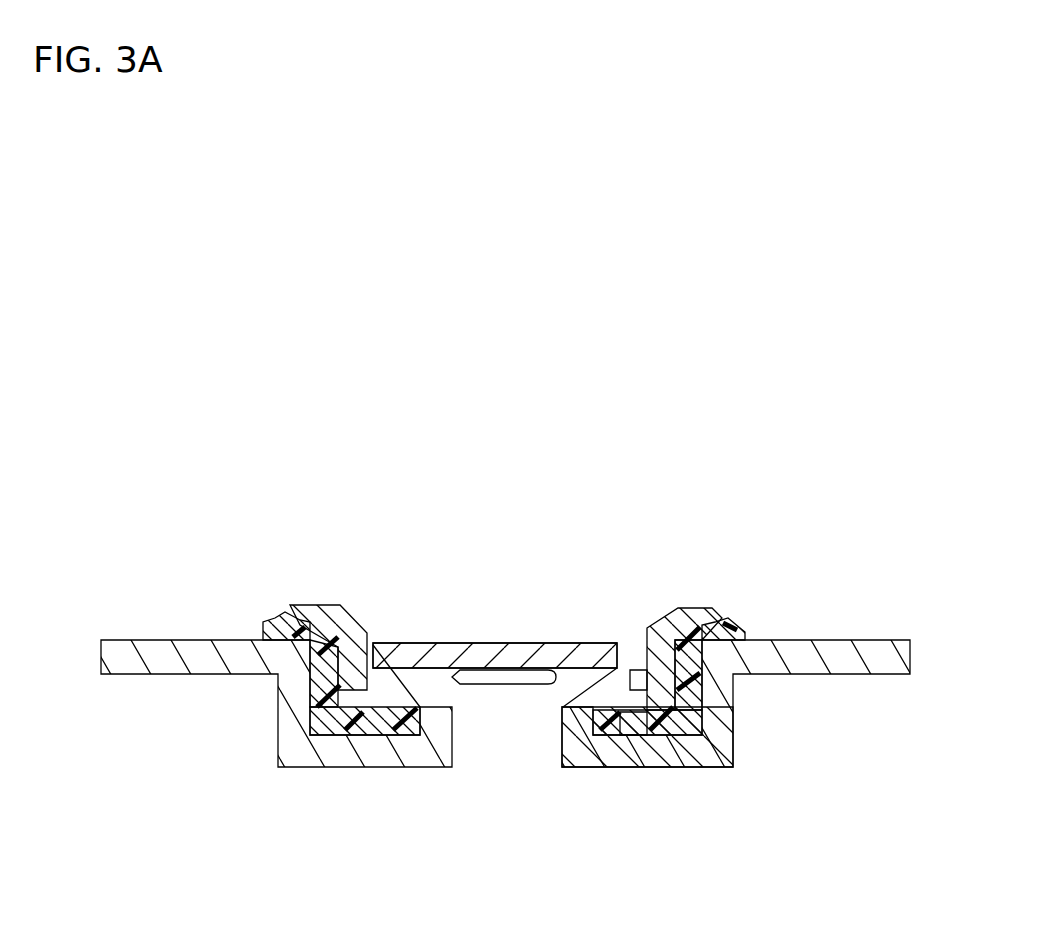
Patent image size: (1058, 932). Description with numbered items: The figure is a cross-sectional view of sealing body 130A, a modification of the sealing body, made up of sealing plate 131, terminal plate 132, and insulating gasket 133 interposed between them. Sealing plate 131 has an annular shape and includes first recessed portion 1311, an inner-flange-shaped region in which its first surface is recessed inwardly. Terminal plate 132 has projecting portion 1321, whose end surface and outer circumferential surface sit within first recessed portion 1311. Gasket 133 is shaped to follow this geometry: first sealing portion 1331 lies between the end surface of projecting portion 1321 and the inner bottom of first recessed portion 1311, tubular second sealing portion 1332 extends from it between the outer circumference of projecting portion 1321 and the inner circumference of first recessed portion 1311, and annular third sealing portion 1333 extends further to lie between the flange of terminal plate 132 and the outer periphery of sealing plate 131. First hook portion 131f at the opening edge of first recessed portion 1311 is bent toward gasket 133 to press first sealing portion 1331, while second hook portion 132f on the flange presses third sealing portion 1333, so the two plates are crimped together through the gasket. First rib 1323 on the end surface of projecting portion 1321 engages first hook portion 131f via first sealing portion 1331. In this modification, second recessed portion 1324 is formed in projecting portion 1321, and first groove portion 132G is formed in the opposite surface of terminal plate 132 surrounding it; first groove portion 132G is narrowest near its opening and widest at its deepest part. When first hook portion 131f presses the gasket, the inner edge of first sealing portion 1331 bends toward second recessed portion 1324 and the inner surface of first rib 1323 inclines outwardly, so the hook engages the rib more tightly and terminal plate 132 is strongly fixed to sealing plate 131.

The sealing body 130A is at (723, 459).
The sealing plate 131 is at (880, 676).
The first recessed portion 1311 is at (698, 747).
The first hook portion 131f is at (440, 688).
The terminal plate 132 is at (530, 613).
The second recessed portion 1324 is at (520, 662).
The projecting portion 1321 is at (495, 655).
The second hook portion 132f is at (300, 607).
The first groove portion 132G is at (653, 678).
The insulating gasket 133 is at (503, 667).
The first sealing portion 1331 is at (563, 703).
The second sealing portion 1332 is at (317, 688).
The third sealing portion 1333 is at (290, 608).
The first rib 1323 is at (640, 737).